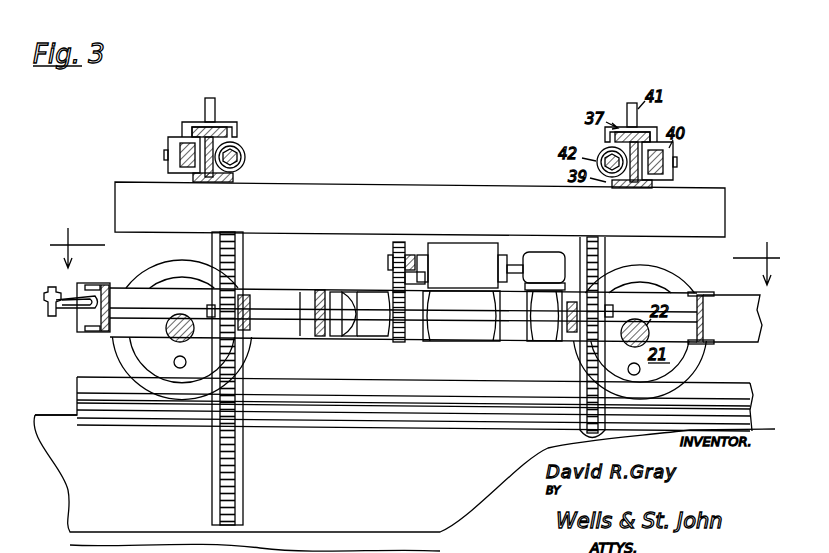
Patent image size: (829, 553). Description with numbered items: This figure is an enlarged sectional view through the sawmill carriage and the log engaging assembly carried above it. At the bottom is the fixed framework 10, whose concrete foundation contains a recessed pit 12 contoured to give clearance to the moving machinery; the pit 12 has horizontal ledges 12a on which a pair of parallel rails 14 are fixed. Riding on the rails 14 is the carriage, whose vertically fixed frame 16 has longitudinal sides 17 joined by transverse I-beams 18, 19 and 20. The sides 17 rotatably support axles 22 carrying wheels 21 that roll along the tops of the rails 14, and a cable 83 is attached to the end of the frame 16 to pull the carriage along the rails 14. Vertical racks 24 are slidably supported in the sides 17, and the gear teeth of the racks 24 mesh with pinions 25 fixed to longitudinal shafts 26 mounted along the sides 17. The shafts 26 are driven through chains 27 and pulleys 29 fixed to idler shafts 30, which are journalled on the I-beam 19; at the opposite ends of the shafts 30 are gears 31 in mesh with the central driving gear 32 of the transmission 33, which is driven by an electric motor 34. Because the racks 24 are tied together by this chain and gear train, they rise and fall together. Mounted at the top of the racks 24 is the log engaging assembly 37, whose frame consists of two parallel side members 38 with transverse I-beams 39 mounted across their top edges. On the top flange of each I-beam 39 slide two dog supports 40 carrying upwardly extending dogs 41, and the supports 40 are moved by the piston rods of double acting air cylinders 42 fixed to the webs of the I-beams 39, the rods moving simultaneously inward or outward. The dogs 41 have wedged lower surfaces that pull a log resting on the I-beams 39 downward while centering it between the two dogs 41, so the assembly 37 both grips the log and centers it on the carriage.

The fixed framework 10 is at (415, 256).
The recessed pit 12 is at (402, 502).
The horizontal ledges 12a is at (72, 402).
The rails 14 is at (470, 378).
The frame 16 is at (730, 343).
The longitudinal sides 17 is at (298, 292).
The transverse I-beam 18 is at (117, 288).
The transverse I-beam 19 is at (348, 292).
The transverse I-beam 20 is at (702, 294).
The wheels 21 is at (168, 360).
The axles 22 is at (178, 318).
The vertical racks 24 is at (240, 259).
The pinions 25 is at (237, 300).
The longitudinal shafts 26 is at (482, 314).
The chains 27 is at (334, 291).
The pulleys 29 is at (318, 295).
The idler shafts 30 is at (372, 322).
The gears 31 is at (401, 338).
The central driving gear 32 is at (396, 252).
The transmission 33 is at (476, 273).
The electric motor 34 is at (555, 275).
The log engaging assembly 37 is at (245, 133).
The side members 38 is at (397, 220).
The transverse I-beams 39 is at (241, 179).
The dog supports 40 is at (187, 122).
The dogs 41 is at (214, 104).
The actuating cylinders 42 is at (248, 157).
The cable 83 is at (73, 312).